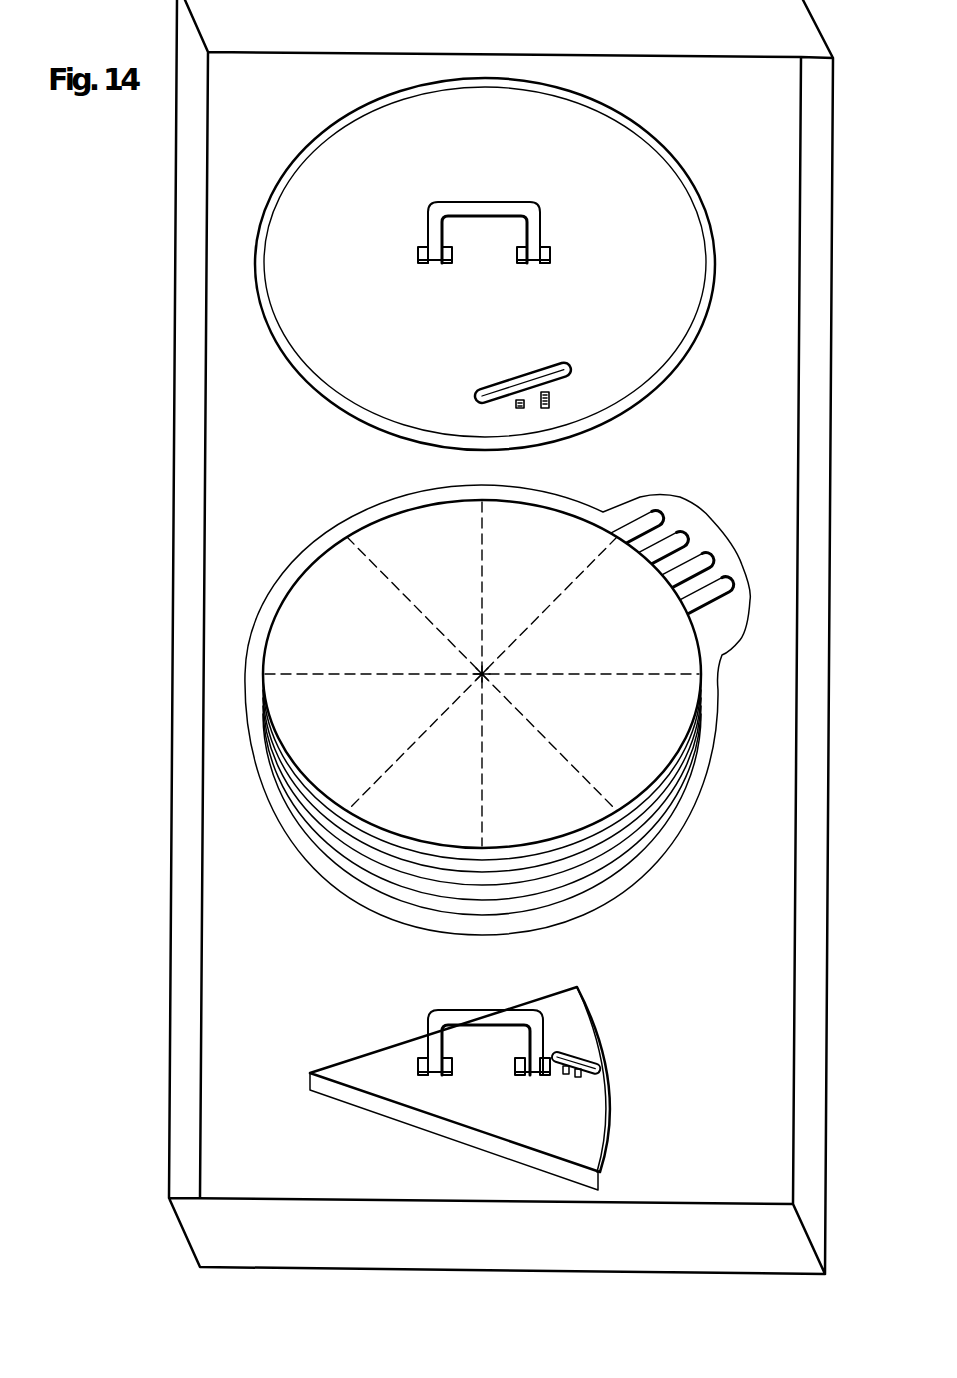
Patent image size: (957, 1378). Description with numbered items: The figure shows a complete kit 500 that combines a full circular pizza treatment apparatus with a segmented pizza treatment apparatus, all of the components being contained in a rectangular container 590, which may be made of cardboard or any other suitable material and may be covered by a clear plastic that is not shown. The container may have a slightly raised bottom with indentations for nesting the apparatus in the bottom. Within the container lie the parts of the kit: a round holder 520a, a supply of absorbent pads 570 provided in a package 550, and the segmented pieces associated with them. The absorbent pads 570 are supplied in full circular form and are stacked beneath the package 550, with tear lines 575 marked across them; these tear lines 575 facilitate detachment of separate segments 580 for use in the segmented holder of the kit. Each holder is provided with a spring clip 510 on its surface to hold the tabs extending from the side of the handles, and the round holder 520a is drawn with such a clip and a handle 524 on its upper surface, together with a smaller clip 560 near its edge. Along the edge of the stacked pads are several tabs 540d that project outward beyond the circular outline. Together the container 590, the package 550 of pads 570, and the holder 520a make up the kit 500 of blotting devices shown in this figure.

The kit 500 is at (266, 100).
The rectangular container 590 is at (820, 142).
The package 550 is at (632, 160).
The handle 524 is at (481, 207).
The spring clip 510 is at (515, 373).
The absorbent pads 570 is at (652, 868).
The tabs 540d is at (687, 558).
The separate segments 580 is at (432, 900).
The tear lines 575 is at (405, 602).
The round holder 520a is at (570, 1025).
The small latch 560 is at (600, 1058).